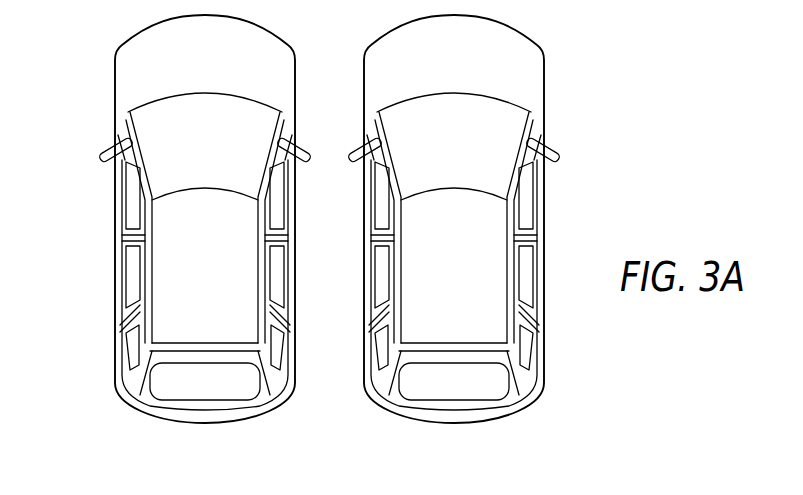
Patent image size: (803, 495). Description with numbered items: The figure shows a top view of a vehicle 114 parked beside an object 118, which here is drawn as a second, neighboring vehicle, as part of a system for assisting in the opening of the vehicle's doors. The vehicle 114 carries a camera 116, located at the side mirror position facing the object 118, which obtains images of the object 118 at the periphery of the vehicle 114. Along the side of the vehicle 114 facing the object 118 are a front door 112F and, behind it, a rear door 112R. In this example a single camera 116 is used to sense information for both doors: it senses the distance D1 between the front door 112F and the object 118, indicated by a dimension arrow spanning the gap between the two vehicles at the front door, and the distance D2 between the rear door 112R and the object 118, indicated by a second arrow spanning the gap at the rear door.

The object 118 is at (114, 105).
The vehicle 114 is at (546, 100).
The camera 116 is at (377, 147).
The front door 112F is at (371, 195).
The rear door 112R is at (369, 287).
The distance between the front door and the object D1 is at (364, 235).
The distance between the rear door and the object D2 is at (364, 322).